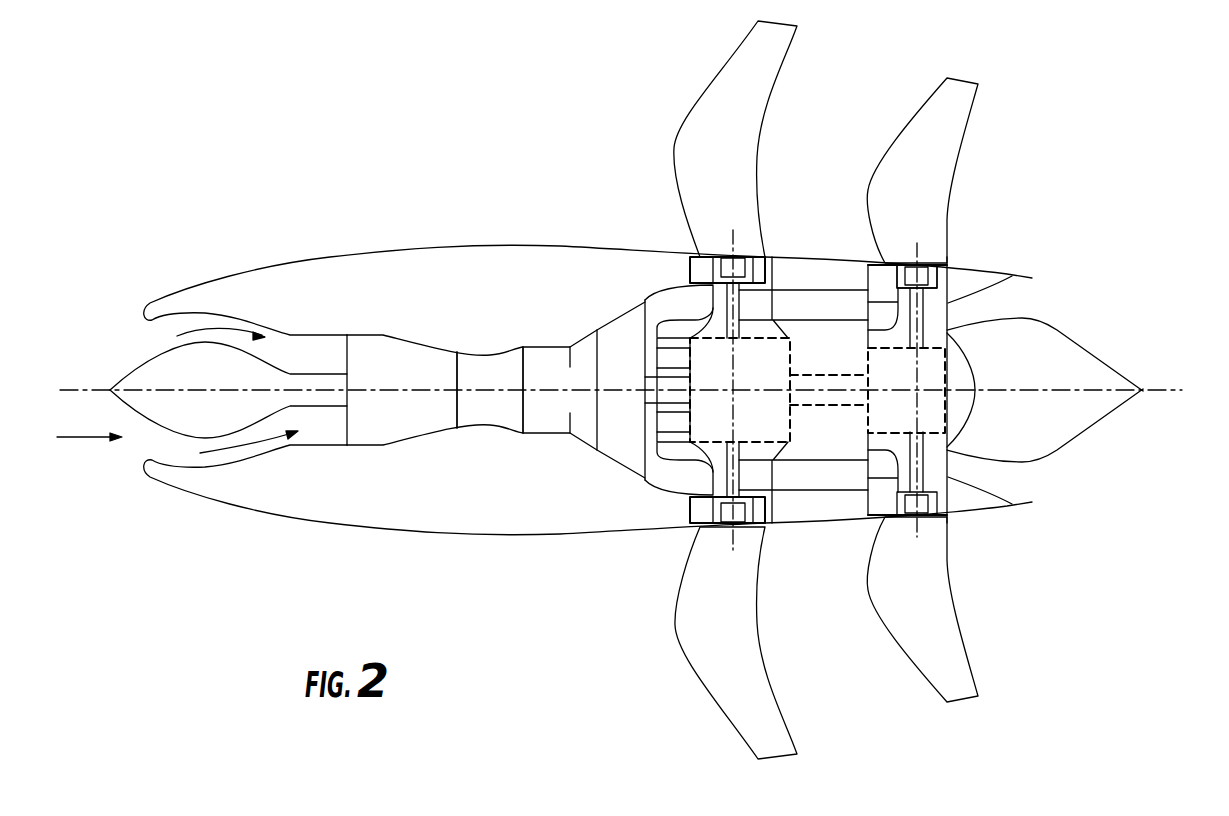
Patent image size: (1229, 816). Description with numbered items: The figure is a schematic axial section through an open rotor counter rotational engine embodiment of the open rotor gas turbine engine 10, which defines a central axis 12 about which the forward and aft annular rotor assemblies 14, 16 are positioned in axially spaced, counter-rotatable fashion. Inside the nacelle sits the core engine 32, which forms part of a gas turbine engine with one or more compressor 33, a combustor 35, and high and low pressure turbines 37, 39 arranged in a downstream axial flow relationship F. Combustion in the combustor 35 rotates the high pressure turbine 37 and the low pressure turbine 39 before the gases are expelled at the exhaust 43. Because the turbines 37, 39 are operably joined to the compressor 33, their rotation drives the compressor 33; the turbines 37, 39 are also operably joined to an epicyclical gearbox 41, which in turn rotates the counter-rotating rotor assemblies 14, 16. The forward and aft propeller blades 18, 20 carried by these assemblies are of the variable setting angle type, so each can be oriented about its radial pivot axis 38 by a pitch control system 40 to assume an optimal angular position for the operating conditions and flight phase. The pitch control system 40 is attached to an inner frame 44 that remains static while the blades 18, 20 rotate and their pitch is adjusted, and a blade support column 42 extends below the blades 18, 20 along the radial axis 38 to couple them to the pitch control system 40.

The open rotor gas turbine engine 10 is at (218, 203).
The central axis 12 is at (1160, 392).
The forward annular rotor assembly 14 is at (702, 698).
The aft annular rotor assembly 16 is at (977, 644).
The forward propeller blades 18 is at (713, 113).
The aft propeller blades 20 is at (940, 132).
The core engine 32 is at (417, 250).
The compressor 33 is at (421, 407).
The combustor 35 is at (502, 407).
The high pressure turbine 37 is at (580, 407).
The radial pivot axis 38 is at (917, 248).
The low pressure turbine 39 is at (633, 407).
The pitch control system 40 is at (903, 385).
The epicyclical gearbox 41 is at (648, 344).
The blade support column 42 is at (948, 313).
The exhaust 43 is at (1103, 340).
The inner frame 44 is at (830, 407).
The downstream axial flow relationship F is at (78, 438).